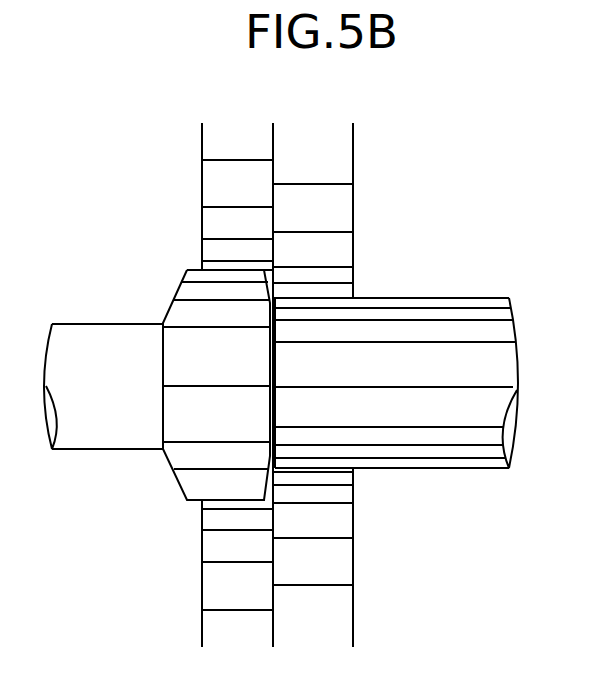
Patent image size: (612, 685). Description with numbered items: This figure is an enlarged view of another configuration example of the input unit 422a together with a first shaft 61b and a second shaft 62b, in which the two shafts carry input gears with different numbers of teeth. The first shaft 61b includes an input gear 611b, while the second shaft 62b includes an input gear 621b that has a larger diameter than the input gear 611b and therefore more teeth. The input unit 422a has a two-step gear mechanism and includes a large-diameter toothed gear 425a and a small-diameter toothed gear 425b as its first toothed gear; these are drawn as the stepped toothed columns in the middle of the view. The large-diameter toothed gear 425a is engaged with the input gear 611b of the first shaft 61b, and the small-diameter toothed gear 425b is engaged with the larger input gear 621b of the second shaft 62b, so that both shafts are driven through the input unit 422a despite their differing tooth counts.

The input unit 422a is at (416, 137).
The large-diameter toothed gear 425a is at (344, 251).
The small-diameter toothed gear 425b is at (212, 178).
The input gear 621b is at (176, 316).
The input gear 611b is at (478, 327).
The first shaft 61b is at (494, 495).
The second shaft 62b is at (90, 481).